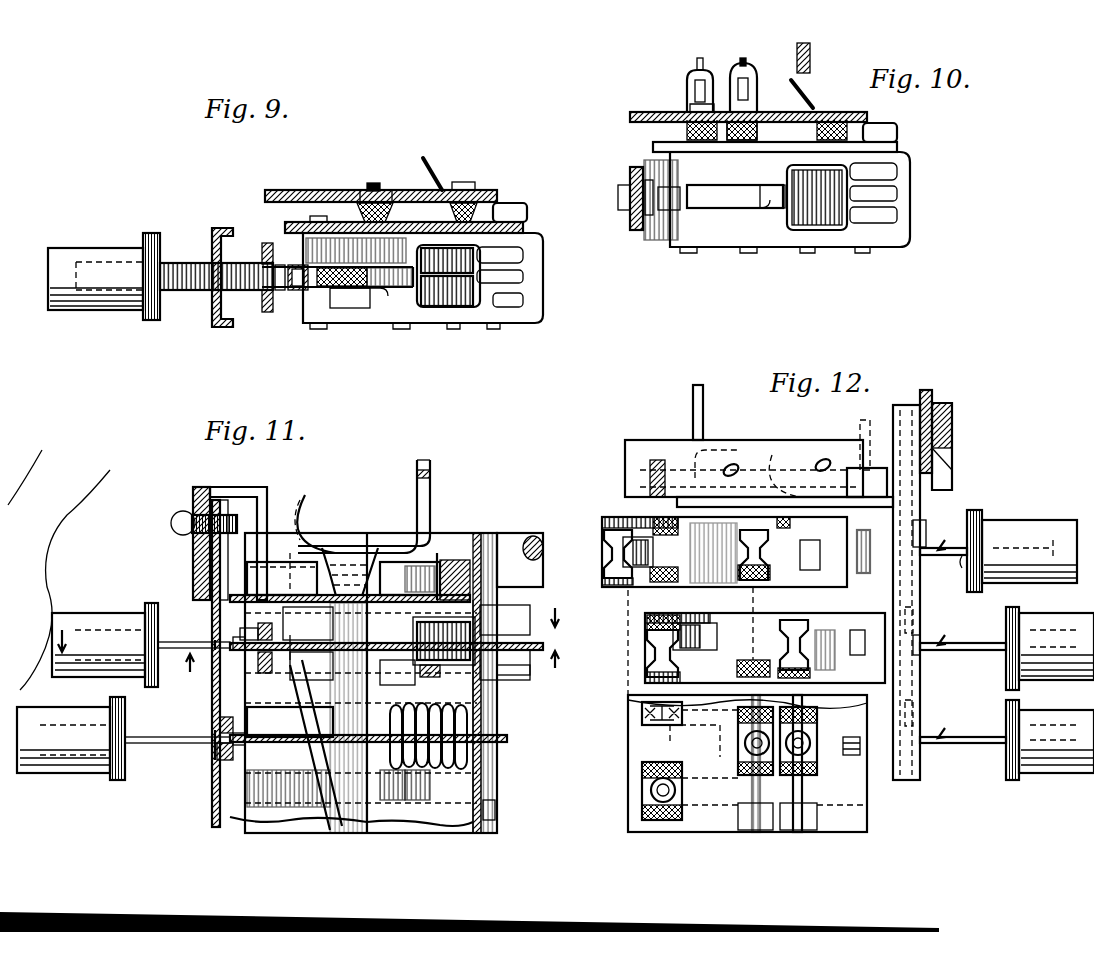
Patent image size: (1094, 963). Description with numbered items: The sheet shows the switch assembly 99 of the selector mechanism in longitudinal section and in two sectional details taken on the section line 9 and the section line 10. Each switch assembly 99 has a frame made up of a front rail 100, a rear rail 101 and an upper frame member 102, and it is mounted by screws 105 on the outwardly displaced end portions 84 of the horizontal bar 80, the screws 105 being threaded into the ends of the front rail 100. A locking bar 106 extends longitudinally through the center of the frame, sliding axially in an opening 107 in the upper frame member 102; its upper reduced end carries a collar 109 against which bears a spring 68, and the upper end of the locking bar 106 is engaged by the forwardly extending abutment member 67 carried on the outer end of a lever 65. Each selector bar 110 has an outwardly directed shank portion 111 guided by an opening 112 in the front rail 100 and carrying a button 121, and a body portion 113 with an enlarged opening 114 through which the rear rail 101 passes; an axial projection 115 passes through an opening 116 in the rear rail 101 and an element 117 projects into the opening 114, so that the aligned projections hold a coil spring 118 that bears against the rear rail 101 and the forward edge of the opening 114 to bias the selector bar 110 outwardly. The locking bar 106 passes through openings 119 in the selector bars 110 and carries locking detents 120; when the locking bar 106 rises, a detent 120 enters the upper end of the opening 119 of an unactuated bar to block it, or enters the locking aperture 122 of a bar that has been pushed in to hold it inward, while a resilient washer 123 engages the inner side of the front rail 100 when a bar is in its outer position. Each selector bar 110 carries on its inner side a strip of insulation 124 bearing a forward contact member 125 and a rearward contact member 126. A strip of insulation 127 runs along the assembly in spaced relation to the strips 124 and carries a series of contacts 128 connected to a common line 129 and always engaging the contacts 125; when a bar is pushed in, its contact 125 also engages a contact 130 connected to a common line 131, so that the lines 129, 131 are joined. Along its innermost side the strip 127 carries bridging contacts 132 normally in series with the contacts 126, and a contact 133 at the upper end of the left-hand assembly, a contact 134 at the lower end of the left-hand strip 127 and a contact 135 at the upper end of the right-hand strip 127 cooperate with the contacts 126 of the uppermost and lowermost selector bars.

In FIG. 11, the section line 9— 9 is at (310, 619).
In FIG. 11, the section line 10— 10 is at (371, 669).
In FIG. 11, the levers 65 is at (430, 468).
In FIG. 12, the levers 65 is at (693, 412).
In FIG. 11, the abutment members 67 is at (320, 520).
In FIG. 12, the abutment members 67 is at (775, 455).
In FIG. 11, the springs 68 is at (410, 578).
In FIG. 11, the horizontal bar 80 is at (200, 487).
In FIG. 12, the horizontal bar 80 is at (930, 392).
In FIG. 11, the end portions 84 is at (267, 490).
In FIG. 9, the switch assembly 99 is at (530, 325).
In FIG. 10, the switch assembly 99 is at (912, 232).
In FIG. 11, the switch assembly 99 is at (498, 718).
In FIG. 12, the switch assembly 99 is at (630, 745).
In FIG. 9, the front rail 100 is at (214, 320).
In FIG. 11, the front rail 100 is at (212, 800).
In FIG. 12, the front rail 100 is at (915, 605).
In FIG. 9, the rear rail 101 is at (480, 300).
In FIG. 10, the rear rail 101 is at (852, 236).
In FIG. 11, the rear rail 101 is at (478, 790).
In FIG. 12, the rear rail 101 is at (640, 462).
In FIG. 11, the upper frame member 102 is at (440, 556).
In FIG. 12, the upper frame member 102 is at (865, 445).
In FIG. 11, the screws 105 is at (172, 522).
In FIG. 12, the screws 105 is at (953, 445).
In FIG. 9, the locking bar 106 is at (350, 290).
In FIG. 11, the locking bar 106 is at (302, 757).
In FIG. 12, the locking bar 106 is at (912, 660).
In FIG. 11, the opening 107 is at (350, 548).
In FIG. 12, the opening 107 is at (740, 452).
In FIG. 11, the collar 109 is at (298, 530).
In FIG. 12, the collar 109 is at (822, 455).
In FIG. 9, the selector bars 110 is at (320, 324).
In FIG. 10, the selector bars 110 is at (722, 247).
In FIG. 11, the selector bars 110 is at (505, 740).
In FIG. 12, the selector bars 110 is at (945, 738).
In FIG. 9, the shank portion 111 is at (190, 290).
In FIG. 10, the shank portion 111 is at (620, 186).
In FIG. 11, the shank portion 111 is at (130, 745).
In FIG. 12, the shank portion 111 is at (985, 760).
In FIG. 9, the opening 112 is at (214, 240).
In FIG. 11, the opening 112 is at (212, 760).
In FIG. 9, the body portion 113 is at (345, 326).
In FIG. 10, the body portion 113 is at (776, 232).
In FIG. 11, the body portion 113 is at (408, 730).
In FIG. 12, the body portion 113 is at (890, 735).
In FIG. 9, the enlarged opening 114 is at (520, 257).
In FIG. 10, the enlarged opening 114 is at (880, 178).
In FIG. 11, the enlarged opening 114 is at (423, 785).
In FIG. 9, the axial projection 115 is at (500, 278).
In FIG. 10, the axial projection 115 is at (872, 196).
In FIG. 11, the axial projection 115 is at (485, 710).
In FIG. 9, the opening 116 is at (525, 305).
In FIG. 10, the opening 116 is at (845, 212).
In FIG. 11, the opening 116 is at (480, 752).
In FIG. 9, the element 117 is at (425, 260).
In FIG. 11, the element 117 is at (420, 668).
In FIG. 9, the coil spring 118 is at (441, 324).
In FIG. 10, the coil spring 118 is at (815, 232).
In FIG. 11, the coil spring 118 is at (470, 750).
In FIG. 9, the openings 119 is at (382, 290).
In FIG. 10, the openings 119 is at (757, 208).
In FIG. 11, the openings 119 is at (320, 650).
In FIG. 9, the locking detents 120 is at (268, 245).
In FIG. 11, the locking detents 120 is at (217, 748).
In FIG. 12, the locking detents 120 is at (912, 665).
In FIG. 9, the button 121 is at (100, 300).
In FIG. 11, the button 121 is at (88, 755).
In FIG. 12, the button 121 is at (1050, 735).
In FIG. 9, the locking aperture 122 is at (293, 292).
In FIG. 10, the locking aperture 122 is at (668, 212).
In FIG. 11, the locking aperture 122 is at (300, 750).
In FIG. 9, the resilient washer 123 is at (277, 308).
In FIG. 10, the resilient washer 123 is at (630, 216).
In FIG. 11, the resilient washer 123 is at (240, 634).
In FIG. 12, the resilient washer 123 is at (912, 703).
In FIG. 9, the strip of insulation 124 is at (405, 222).
In FIG. 10, the strip of insulation 124 is at (880, 150).
In FIG. 11, the strip of insulation 124 is at (490, 727).
In FIG. 12, the strip of insulation 124 is at (620, 575).
In FIG. 9, the contact member 125 is at (357, 212).
In FIG. 10, the contact member 125 is at (760, 135).
In FIG. 11, the contact member 125 is at (421, 579).
In FIG. 12, the contact member 125 is at (750, 578).
In FIG. 9, the contact member 126 is at (515, 210).
In FIG. 10, the contact member 126 is at (885, 126).
In FIG. 12, the contact member 126 is at (740, 740).
In FIG. 9, the strip of insulation 127 is at (342, 192).
In FIG. 10, the strip of insulation 127 is at (642, 112).
In FIG. 11, the strip of insulation 127 is at (498, 822).
In FIG. 12, the strip of insulation 127 is at (635, 455).
In FIG. 10, the contacts 128 is at (692, 120).
In FIG. 11, the contacts 128 is at (320, 597).
In FIG. 12, the contacts 128 is at (870, 770).
In FIG. 10, the common line 129 is at (695, 96).
In FIG. 12, the common line 129 is at (803, 790).
In FIG. 9, the contact 130 is at (375, 184).
In FIG. 10, the contact 130 is at (748, 106).
In FIG. 11, the contact 130 is at (300, 675).
In FIG. 12, the contact 130 is at (690, 800).
In FIG. 10, the common line 131 is at (740, 64).
In FIG. 9, the bridging contacts 132 is at (432, 162).
In FIG. 10, the bridging contacts 132 is at (826, 118).
In FIG. 11, the bridging contacts 132 is at (496, 812).
In FIG. 12, the bridging contacts 132 is at (640, 680).
In FIG. 11, the contact 133 is at (220, 725).
In FIG. 12, the contact 133 is at (885, 530).
In FIG. 12, the contact 134 is at (729, 553).
In FIG. 12, the contact 135 is at (655, 500).